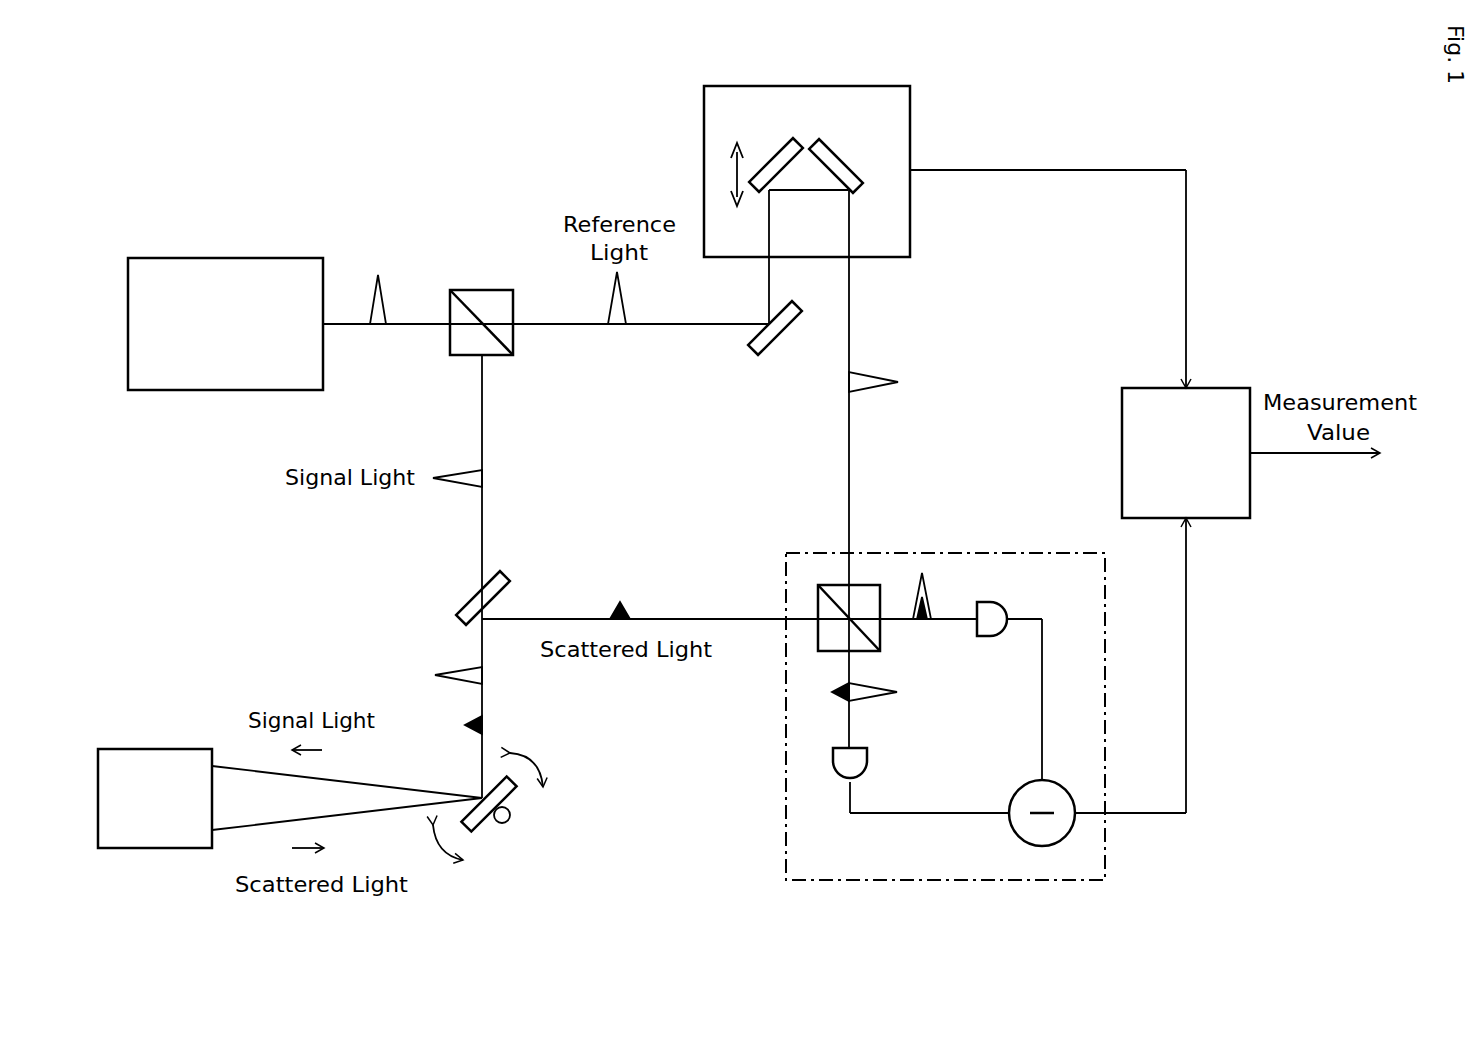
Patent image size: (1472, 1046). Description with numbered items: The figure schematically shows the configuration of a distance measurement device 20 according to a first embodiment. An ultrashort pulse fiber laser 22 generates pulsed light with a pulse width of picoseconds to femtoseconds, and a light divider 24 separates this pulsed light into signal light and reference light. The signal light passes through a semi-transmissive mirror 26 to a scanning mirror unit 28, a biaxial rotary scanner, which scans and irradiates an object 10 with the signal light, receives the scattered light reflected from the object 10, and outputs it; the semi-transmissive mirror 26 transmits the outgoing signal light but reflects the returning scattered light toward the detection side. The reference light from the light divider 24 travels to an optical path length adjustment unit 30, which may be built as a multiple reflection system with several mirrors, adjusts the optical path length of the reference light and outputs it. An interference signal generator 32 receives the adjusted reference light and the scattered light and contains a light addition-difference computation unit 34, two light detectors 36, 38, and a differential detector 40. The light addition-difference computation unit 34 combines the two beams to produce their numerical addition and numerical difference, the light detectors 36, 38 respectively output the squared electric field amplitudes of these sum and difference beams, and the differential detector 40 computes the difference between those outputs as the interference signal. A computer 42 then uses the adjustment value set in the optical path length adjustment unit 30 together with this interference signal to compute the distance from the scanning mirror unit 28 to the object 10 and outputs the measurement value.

The object 10 is at (150, 749).
The distance measurement device 20 is at (1110, 93).
The ultrashort pulse fiber laser 22 is at (225, 258).
The light divider 24 is at (478, 290).
The semi-transmissive mirror 26 is at (508, 595).
The scanning mirror unit 28 is at (512, 798).
The optical path length adjustment unit 30 is at (910, 130).
The interference signal generator 32 is at (948, 553).
The light addition-difference computation unit 34 is at (818, 605).
The light detector 36 is at (990, 602).
The light detector 38 is at (867, 763).
The differential detector 40 is at (1068, 835).
The computer 42 is at (1213, 388).